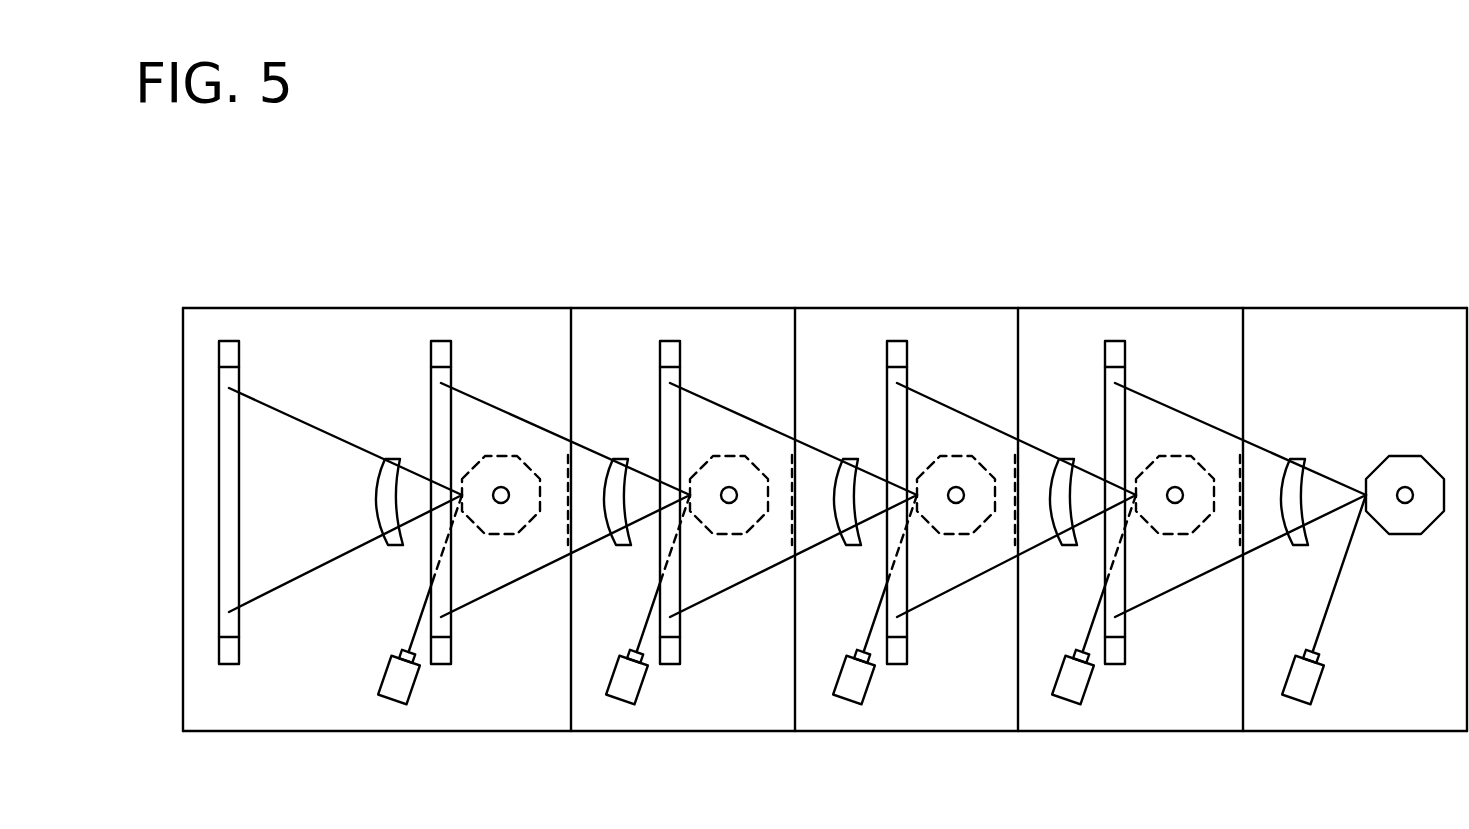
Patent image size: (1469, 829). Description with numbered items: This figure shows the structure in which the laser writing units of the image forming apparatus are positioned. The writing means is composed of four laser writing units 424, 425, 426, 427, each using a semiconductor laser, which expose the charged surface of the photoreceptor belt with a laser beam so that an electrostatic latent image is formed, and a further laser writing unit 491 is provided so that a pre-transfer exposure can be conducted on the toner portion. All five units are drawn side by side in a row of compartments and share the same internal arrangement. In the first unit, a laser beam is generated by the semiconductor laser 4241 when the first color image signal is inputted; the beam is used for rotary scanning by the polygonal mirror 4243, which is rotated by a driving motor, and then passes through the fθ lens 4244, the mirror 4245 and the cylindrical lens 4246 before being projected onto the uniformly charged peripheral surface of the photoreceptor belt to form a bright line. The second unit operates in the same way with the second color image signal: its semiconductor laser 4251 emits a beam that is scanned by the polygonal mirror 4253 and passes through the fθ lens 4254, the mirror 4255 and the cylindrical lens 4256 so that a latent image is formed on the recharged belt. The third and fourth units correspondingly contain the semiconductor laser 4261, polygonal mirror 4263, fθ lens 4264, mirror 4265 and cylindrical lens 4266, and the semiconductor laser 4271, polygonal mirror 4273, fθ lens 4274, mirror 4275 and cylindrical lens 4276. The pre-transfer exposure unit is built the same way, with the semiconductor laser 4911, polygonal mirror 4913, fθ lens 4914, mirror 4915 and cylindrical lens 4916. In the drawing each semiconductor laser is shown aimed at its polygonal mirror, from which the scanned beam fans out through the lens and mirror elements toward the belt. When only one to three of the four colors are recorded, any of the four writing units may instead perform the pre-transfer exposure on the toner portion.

The laser writing unit 424 is at (1408, 332).
The semiconductor laser 4241 is at (1318, 683).
The polygonal mirror 4243 is at (1397, 457).
The fθ lens 4244 is at (1303, 457).
The mirror 4245 is at (1124, 377).
The cylindrical lens 4246 is at (1120, 347).
The laser writing unit 425 is at (1205, 333).
The semiconductor laser 4251 is at (1085, 683).
The polygonal mirror 4253 is at (1183, 457).
The fθ lens 4254 is at (1070, 457).
The mirror 4255 is at (908, 383).
The cylindrical lens 4256 is at (895, 350).
The laser writing unit 426 is at (977, 330).
The semiconductor laser 4261 is at (862, 683).
The polygonal mirror 4263 is at (963, 457).
The fθ lens 4264 is at (857, 457).
The mirror 4265 is at (677, 377).
The cylindrical lens 4266 is at (668, 347).
The laser writing unit 427 is at (773, 337).
The semiconductor laser 4271 is at (642, 688).
The polygonal mirror 4273 is at (737, 457).
The fθ lens 4274 is at (621, 458).
The mirror 4275 is at (451, 366).
The cylindrical lens 4276 is at (437, 350).
The laser writing unit 491 is at (523, 325).
The semiconductor laser 4911 is at (413, 690).
The polygonal mirror 4913 is at (510, 468).
The fθ lens 4914 is at (388, 460).
The mirror 4915 is at (240, 380).
The cylindrical lens 4916 is at (228, 348).